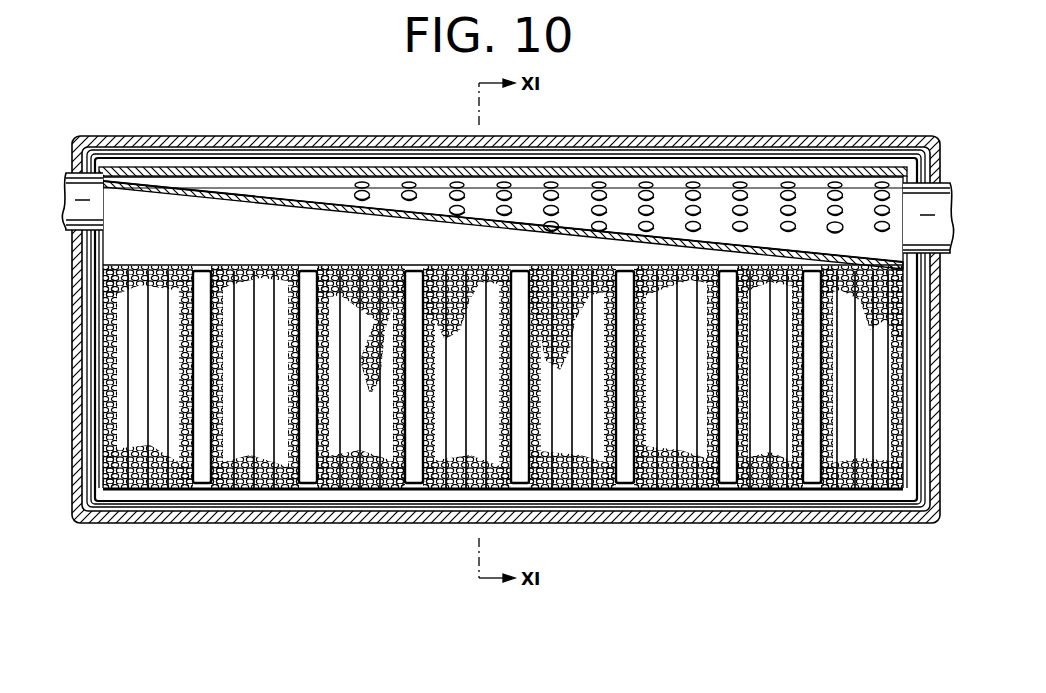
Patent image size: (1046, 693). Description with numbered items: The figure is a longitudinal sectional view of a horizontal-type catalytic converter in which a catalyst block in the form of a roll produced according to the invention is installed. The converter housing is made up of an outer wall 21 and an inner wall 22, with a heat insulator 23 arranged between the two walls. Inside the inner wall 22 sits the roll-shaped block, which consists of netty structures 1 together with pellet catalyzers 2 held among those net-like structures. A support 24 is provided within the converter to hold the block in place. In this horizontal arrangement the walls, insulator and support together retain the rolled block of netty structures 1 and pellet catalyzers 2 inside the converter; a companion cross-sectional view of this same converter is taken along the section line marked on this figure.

The netty structures 1 is at (127, 330).
The pellet catalyzers 2 is at (120, 288).
The outer wall 21 is at (665, 526).
The inner wall 22 is at (778, 519).
The heat insulator 23 is at (725, 522).
The support for a block 24 is at (309, 472).